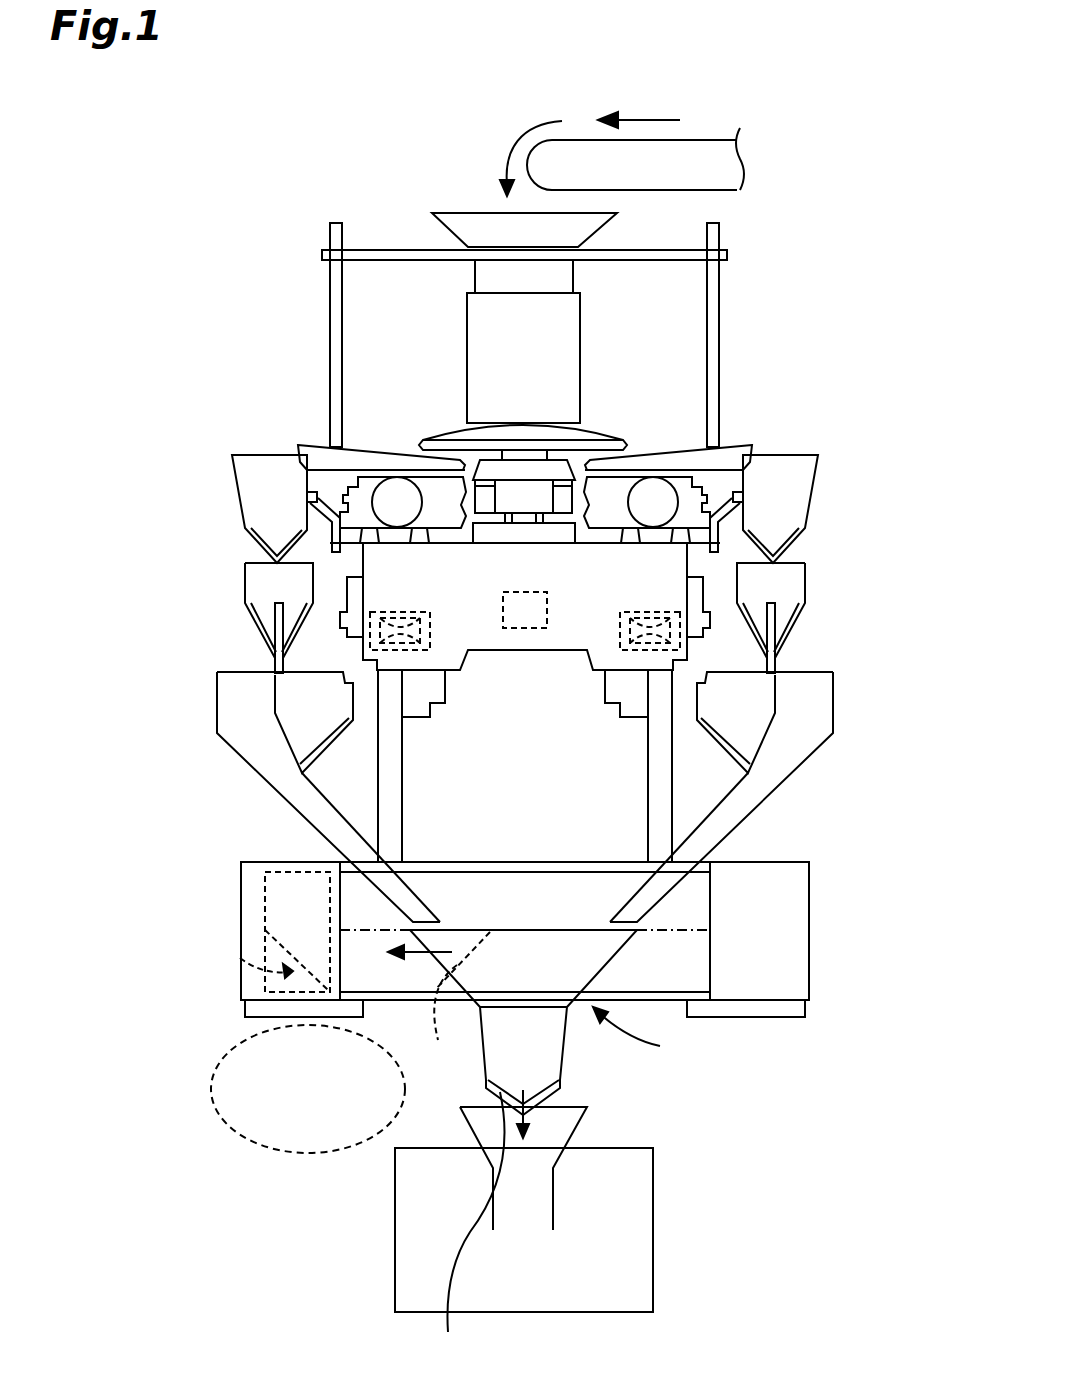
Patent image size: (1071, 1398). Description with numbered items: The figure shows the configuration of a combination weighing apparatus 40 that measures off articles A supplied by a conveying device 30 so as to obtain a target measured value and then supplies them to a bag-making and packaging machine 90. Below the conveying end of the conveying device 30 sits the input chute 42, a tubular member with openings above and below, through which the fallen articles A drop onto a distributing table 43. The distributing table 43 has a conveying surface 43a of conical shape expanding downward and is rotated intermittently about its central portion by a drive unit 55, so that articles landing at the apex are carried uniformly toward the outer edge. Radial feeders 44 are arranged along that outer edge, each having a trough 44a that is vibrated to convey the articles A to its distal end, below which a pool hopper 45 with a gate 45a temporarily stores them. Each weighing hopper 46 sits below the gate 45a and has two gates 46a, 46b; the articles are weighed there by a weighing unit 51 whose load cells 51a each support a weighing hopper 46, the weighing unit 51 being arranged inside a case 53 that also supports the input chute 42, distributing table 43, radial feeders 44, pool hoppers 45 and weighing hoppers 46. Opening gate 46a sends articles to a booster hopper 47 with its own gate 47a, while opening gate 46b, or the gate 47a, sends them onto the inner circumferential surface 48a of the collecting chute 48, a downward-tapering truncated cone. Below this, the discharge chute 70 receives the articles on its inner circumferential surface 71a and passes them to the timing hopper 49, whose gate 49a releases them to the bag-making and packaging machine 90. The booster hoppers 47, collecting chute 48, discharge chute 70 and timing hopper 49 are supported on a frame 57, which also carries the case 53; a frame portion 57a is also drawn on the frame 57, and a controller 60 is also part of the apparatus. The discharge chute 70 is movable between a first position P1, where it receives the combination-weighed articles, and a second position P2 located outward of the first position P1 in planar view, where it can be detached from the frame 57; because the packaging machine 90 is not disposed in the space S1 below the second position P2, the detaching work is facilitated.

The conveying device 30 is at (690, 150).
The combination weighing apparatus 40 is at (270, 121).
The input chute 42 is at (468, 226).
The distributing table 43 is at (583, 440).
The conveying surface 43a is at (447, 440).
The radial feeder 44 is at (308, 446).
The trough 44a is at (348, 445).
The pool hopper 45 is at (248, 487).
The gate 45a is at (258, 548).
The weighing hopper 46 is at (262, 590).
The gate 46a is at (282, 655).
The gate 46b is at (268, 621).
The booster hopper 47 is at (290, 699).
The gate 47a is at (280, 753).
The collecting chute 48 is at (268, 776).
The inner circumferential surface 48a is at (330, 806).
The timing hopper 49 is at (558, 1062).
The gate 49a is at (466, 1232).
The weighing unit 51 is at (525, 669).
The load cell 51a is at (427, 607).
The case 53 is at (537, 633).
The drive unit 55 is at (625, 447).
The frame 57 is at (795, 913).
The lower frame side wall 57a is at (700, 965).
The controller 60 is at (517, 630).
The discharge chute 70 is at (262, 968).
The inner circumferential surface 71a is at (577, 927).
The bag-making and packaging machine 90 is at (640, 1221).
The articles A is at (502, 150).
The first position P1 is at (640, 1037).
The second position P2 is at (285, 975).
The space S1 is at (288, 1153).